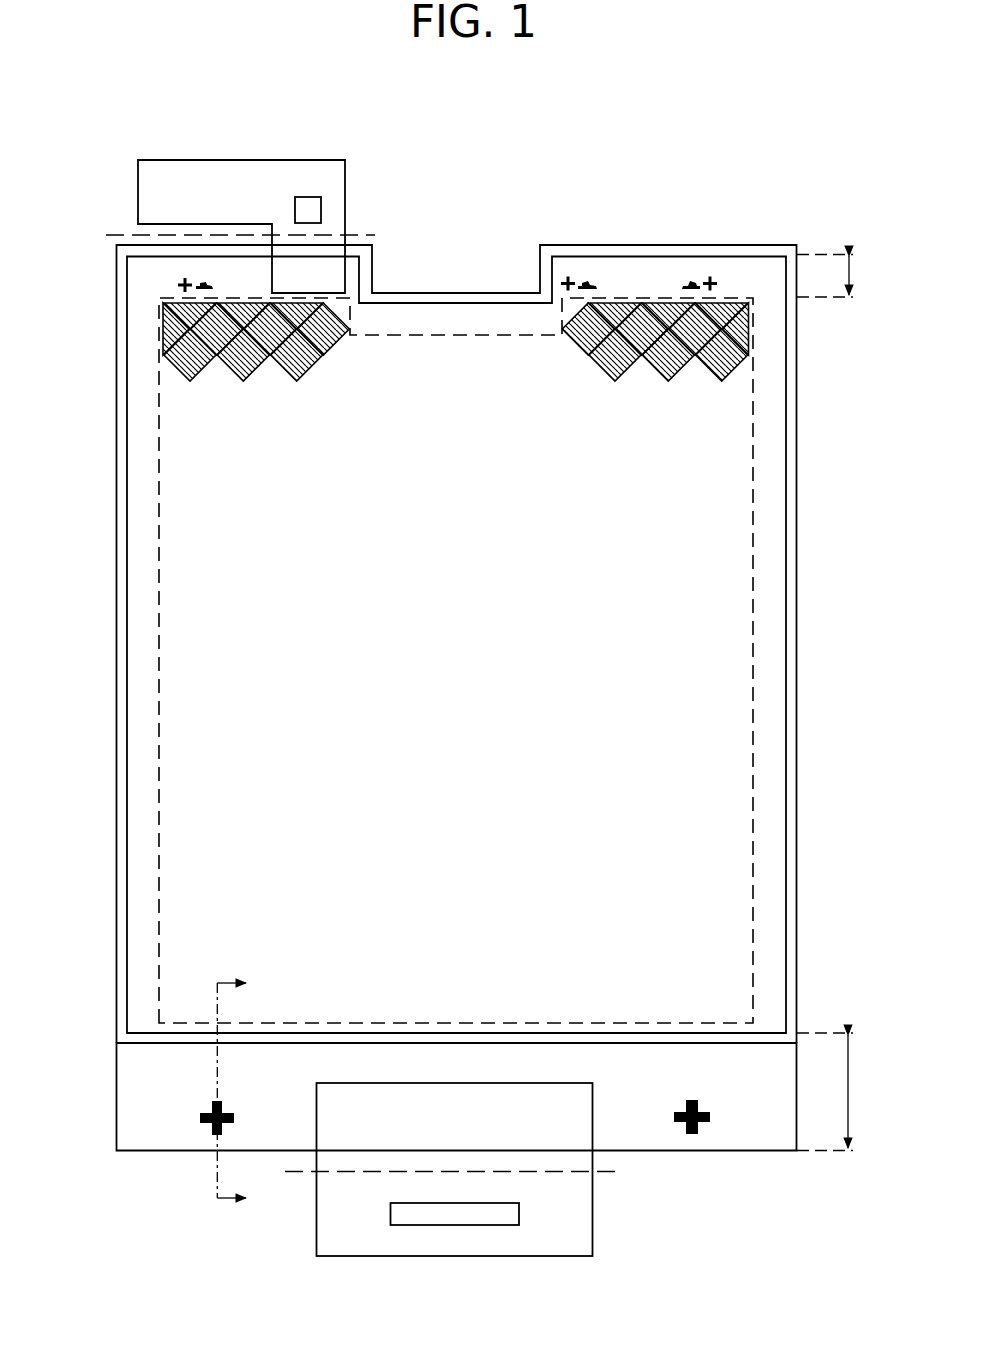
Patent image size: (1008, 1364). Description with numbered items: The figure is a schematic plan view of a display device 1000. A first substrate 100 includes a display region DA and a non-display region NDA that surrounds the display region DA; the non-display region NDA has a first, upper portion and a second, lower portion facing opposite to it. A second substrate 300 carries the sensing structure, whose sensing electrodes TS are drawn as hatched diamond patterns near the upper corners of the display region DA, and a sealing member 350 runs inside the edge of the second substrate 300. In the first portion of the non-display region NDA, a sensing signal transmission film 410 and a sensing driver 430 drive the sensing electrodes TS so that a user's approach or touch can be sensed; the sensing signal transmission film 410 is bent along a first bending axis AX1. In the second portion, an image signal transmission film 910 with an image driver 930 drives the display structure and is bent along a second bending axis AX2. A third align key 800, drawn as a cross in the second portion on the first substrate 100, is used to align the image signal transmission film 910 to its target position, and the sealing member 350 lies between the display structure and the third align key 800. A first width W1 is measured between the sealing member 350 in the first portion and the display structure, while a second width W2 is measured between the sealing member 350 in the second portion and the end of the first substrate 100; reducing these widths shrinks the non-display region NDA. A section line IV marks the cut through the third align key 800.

The display device 1000 is at (795, 187).
The first substrate 100 is at (117, 1089).
The second substrate 300 is at (116, 737).
The sealing member 350 is at (127, 905).
The sensing signal transmission film 410 is at (345, 173).
The sensing driver 430 is at (321, 210).
The third align key 800 is at (208, 1125).
The image signal transmission film 910 is at (592, 1227).
The image driver 930 is at (455, 1225).
The sensing electrodes TS is at (737, 362).
The display region DA is at (737, 642).
The non-display region NDA is at (771, 846).
The first bending axis AX1 is at (221, 235).
The second bending axis AX2 is at (476, 1174).
The first width W1 is at (837, 276).
The second width W2 is at (838, 1092).
The section line IV-IV' IV is at (248, 1091).